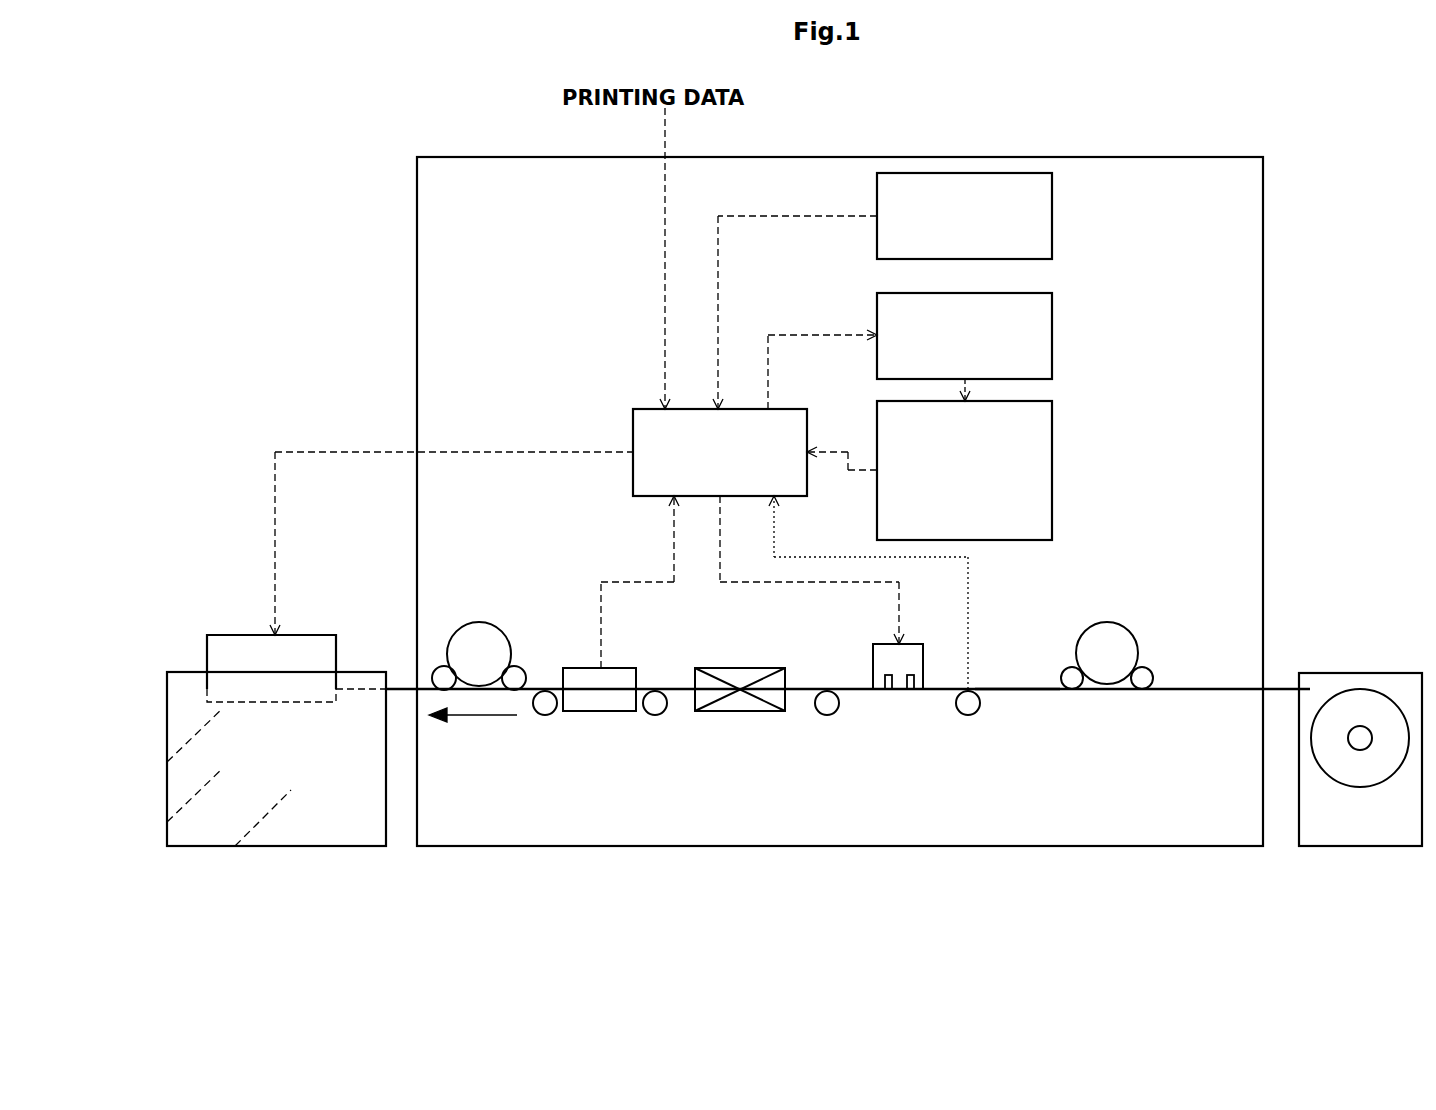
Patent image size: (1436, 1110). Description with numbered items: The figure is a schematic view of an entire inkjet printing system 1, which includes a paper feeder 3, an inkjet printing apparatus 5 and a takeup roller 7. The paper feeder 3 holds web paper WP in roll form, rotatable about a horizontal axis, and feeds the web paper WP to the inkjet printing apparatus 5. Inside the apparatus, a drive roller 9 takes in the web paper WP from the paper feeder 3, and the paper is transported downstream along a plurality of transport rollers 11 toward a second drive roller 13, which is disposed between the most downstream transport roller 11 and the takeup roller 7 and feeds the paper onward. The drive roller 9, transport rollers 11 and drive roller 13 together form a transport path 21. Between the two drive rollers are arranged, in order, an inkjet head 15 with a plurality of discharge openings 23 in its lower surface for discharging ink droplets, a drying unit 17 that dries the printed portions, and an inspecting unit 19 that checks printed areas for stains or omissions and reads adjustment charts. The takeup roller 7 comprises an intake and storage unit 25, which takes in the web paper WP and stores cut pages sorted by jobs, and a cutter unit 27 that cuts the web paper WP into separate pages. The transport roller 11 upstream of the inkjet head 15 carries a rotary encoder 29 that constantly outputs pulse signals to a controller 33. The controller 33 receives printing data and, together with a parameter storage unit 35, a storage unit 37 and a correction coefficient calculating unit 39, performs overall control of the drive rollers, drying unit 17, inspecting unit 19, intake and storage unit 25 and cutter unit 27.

The inkjet printing system 1 is at (1352, 378).
The paper feeder 3 is at (1338, 668).
The inkjet printing apparatus 5 is at (1264, 250).
The takeup roller 7 is at (355, 615).
The drive roller 9 is at (1125, 628).
The transport rollers 11 is at (655, 715).
The drive roller 13 is at (498, 625).
The inkjet head 15 is at (873, 658).
The drying unit 17 is at (735, 668).
The inspecting unit 19 is at (615, 668).
The transport path 21 is at (985, 680).
The discharge openings 23 is at (888, 675).
The intake and storage unit 25 is at (177, 672).
The cutter unit 27 is at (232, 635).
The rotary encoder 29 is at (958, 712).
The controller 33 is at (633, 428).
The parameter storage unit 35 is at (1052, 218).
The storage unit 37 is at (1052, 338).
The correction coefficient calculating unit 39 is at (1052, 500).
The web paper WP is at (1383, 693).